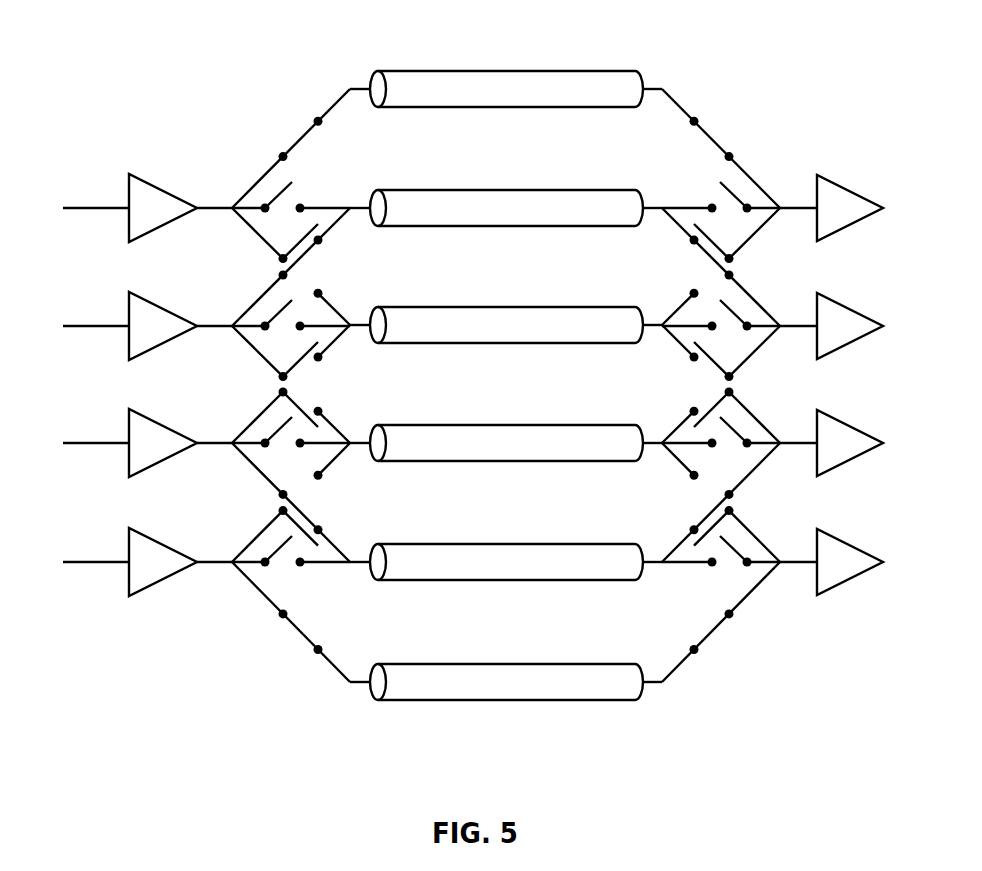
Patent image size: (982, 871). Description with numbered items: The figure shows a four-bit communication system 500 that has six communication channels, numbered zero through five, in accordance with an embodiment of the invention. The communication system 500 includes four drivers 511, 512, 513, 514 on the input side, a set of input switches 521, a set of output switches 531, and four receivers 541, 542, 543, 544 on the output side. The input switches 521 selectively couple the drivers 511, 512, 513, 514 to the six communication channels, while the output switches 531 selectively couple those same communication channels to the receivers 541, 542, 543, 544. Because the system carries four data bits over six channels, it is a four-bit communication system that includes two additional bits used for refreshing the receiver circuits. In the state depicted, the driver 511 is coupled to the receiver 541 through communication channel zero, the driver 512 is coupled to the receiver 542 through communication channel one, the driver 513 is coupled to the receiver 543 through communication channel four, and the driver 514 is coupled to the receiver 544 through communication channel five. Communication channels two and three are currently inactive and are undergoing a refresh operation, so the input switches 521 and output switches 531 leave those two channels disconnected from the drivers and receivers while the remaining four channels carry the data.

The communication system 500 is at (615, 31).
The driver 511 is at (147, 208).
The driver 512 is at (147, 326).
The driver 513 is at (147, 443).
The driver 514 is at (147, 562).
The input switches 521 is at (232, 713).
The output switches 531 is at (663, 713).
The receiver 541 is at (831, 208).
The receiver 542 is at (831, 326).
The receiver 543 is at (831, 443).
The receiver 544 is at (831, 562).